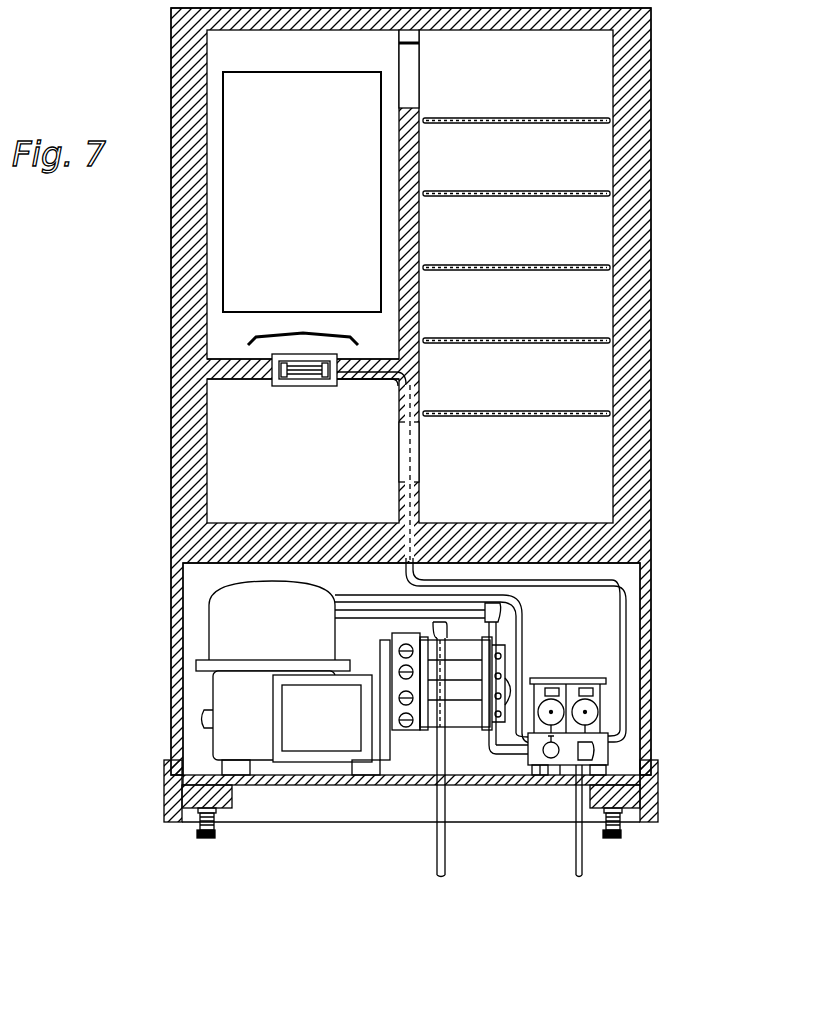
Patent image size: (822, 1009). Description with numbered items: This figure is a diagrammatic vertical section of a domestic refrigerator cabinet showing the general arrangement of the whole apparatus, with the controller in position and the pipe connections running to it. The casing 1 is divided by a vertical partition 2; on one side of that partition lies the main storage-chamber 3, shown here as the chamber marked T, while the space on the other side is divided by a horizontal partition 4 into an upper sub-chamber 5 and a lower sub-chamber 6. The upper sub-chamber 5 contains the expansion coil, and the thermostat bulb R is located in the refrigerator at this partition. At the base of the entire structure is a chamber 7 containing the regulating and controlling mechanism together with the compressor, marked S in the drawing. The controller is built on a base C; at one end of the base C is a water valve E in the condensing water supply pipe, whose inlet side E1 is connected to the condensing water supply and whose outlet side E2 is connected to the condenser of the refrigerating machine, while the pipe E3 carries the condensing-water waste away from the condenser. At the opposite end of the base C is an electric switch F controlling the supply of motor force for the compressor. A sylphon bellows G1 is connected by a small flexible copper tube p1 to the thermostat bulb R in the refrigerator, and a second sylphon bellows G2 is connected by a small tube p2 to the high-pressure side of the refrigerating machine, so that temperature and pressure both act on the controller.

The casing 1 is at (169, 236).
The vertical partition 2 is at (421, 236).
The main storage-chamber 3 is at (585, 233).
The horizontal partition 4 is at (254, 382).
The upper sub-chamber 5 is at (303, 194).
The lower sub-chamber 6 is at (251, 491).
The chamber 7 is at (206, 580).
The thermostat bulb R is at (306, 387).
The storage chamber T is at (554, 276).
The compressor S is at (288, 678).
The flexible tube p1 is at (624, 667).
The small tube p2 is at (524, 661).
The electric switch F is at (558, 682).
The base C is at (604, 758).
The sylphon bellows G1 is at (596, 738).
The sylphon bellows G2 is at (502, 744).
The inlet side of the water valve E1 is at (601, 748).
The outlet side of the water valve E2 is at (522, 748).
The condensing-water waste pipe E3 is at (436, 850).
The water valve E is at (536, 766).